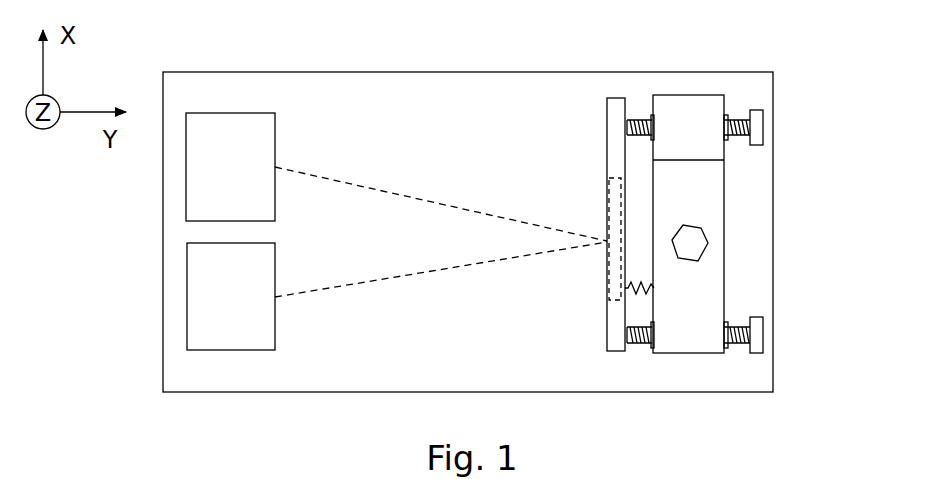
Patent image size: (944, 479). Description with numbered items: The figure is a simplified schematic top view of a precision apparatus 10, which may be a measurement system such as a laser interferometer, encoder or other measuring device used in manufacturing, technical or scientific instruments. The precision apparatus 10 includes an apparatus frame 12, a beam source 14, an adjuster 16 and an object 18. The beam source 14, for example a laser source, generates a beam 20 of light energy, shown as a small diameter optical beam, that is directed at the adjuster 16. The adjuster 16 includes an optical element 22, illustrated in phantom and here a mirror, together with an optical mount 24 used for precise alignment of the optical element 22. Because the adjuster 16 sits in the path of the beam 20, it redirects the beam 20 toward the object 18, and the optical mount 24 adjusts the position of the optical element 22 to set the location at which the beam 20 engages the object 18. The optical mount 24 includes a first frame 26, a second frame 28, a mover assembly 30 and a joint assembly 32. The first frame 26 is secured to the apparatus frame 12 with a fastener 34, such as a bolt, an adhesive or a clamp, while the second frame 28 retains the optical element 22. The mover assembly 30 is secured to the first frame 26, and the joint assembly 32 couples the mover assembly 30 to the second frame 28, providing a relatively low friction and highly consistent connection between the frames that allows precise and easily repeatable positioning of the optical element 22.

The precision apparatus 10 is at (501, 79).
The apparatus frame 12 is at (399, 142).
The beam source 14 is at (210, 176).
The adjuster 16 is at (833, 132).
The object 18 is at (210, 310).
The beam 20 is at (458, 210).
The optical element 22 is at (615, 215).
The optical mount 24 is at (710, 182).
The first frame 26 is at (688, 105).
The second frame 28 is at (617, 107).
The mover assembly 30 is at (760, 108).
The joint assembly 32 is at (633, 118).
The fastener 34 is at (697, 242).